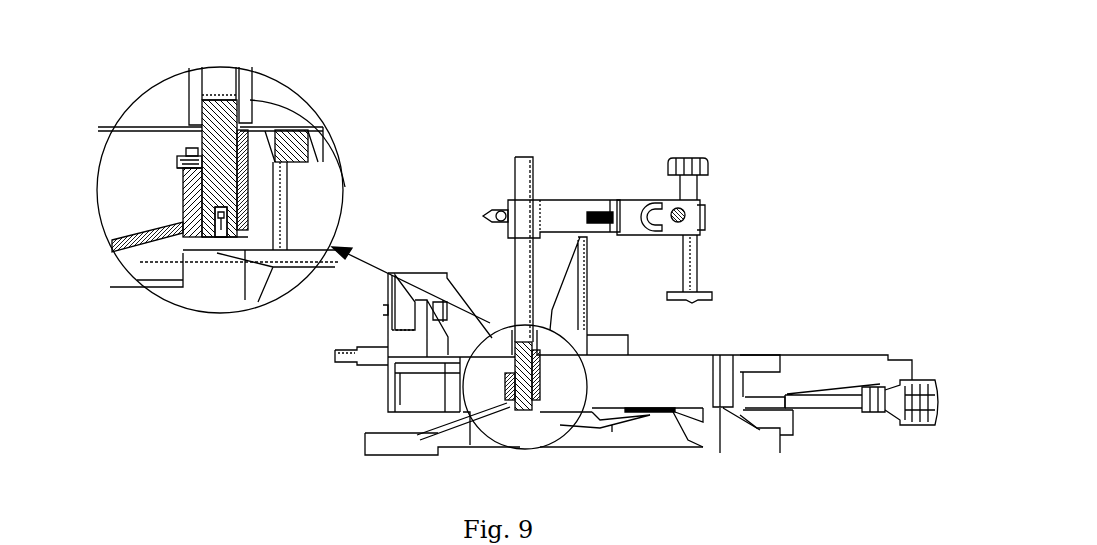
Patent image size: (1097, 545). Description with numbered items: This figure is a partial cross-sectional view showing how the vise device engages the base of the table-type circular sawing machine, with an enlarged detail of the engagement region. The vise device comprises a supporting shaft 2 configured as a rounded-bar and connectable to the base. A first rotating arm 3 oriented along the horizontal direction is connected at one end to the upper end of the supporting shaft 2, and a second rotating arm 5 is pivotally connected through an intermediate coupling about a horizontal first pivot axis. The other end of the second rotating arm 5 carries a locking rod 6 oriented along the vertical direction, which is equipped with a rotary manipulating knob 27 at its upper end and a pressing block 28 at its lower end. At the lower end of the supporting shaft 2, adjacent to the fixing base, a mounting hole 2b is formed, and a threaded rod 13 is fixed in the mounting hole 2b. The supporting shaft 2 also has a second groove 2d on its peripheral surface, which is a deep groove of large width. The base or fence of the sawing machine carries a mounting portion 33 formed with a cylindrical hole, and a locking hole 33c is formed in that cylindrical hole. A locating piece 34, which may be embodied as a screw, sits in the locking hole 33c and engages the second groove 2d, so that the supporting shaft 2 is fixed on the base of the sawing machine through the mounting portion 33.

The supporting shaft 2 is at (202, 125).
The mounting hole 2b is at (217, 212).
The second groove 2d is at (187, 154).
The first rotating arm 3 is at (560, 200).
The second rotating arm 5 is at (660, 200).
The locking rod 6 is at (700, 248).
The threaded rod 13 is at (215, 236).
The rotary manipulating knob 27 is at (712, 162).
The pressing block 28 is at (712, 300).
The mounting portion 33 is at (183, 190).
The locking hole 33c is at (177, 170).
The locating piece 34 is at (177, 160).